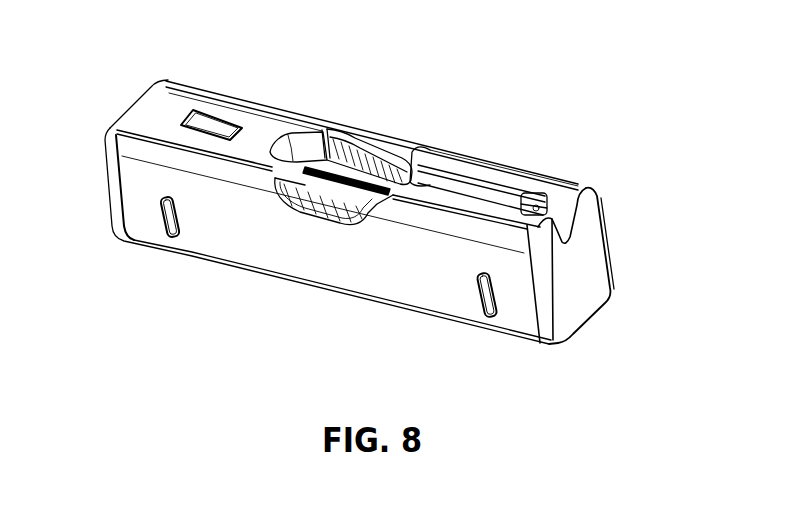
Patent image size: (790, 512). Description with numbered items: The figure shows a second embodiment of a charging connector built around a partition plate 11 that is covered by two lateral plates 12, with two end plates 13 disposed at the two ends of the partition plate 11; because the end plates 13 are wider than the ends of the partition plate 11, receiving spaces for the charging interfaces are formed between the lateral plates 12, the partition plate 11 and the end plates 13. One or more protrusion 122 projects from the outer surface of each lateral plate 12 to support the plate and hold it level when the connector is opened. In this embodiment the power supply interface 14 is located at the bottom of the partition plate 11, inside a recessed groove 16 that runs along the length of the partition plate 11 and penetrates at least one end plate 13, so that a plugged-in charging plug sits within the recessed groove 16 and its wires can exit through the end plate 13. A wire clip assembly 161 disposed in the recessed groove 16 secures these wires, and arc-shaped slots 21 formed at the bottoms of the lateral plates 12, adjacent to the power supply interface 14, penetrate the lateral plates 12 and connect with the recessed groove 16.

The partition plate 11 is at (165, 125).
The lateral plates 12 is at (417, 272).
The protrusion 122 is at (160, 233).
The end plates 13 is at (585, 273).
The power supply interface 14 is at (362, 153).
The recessed groove 16 is at (445, 185).
The wire clip assembly 161 is at (530, 200).
The arc-shaped slots 21 is at (327, 200).